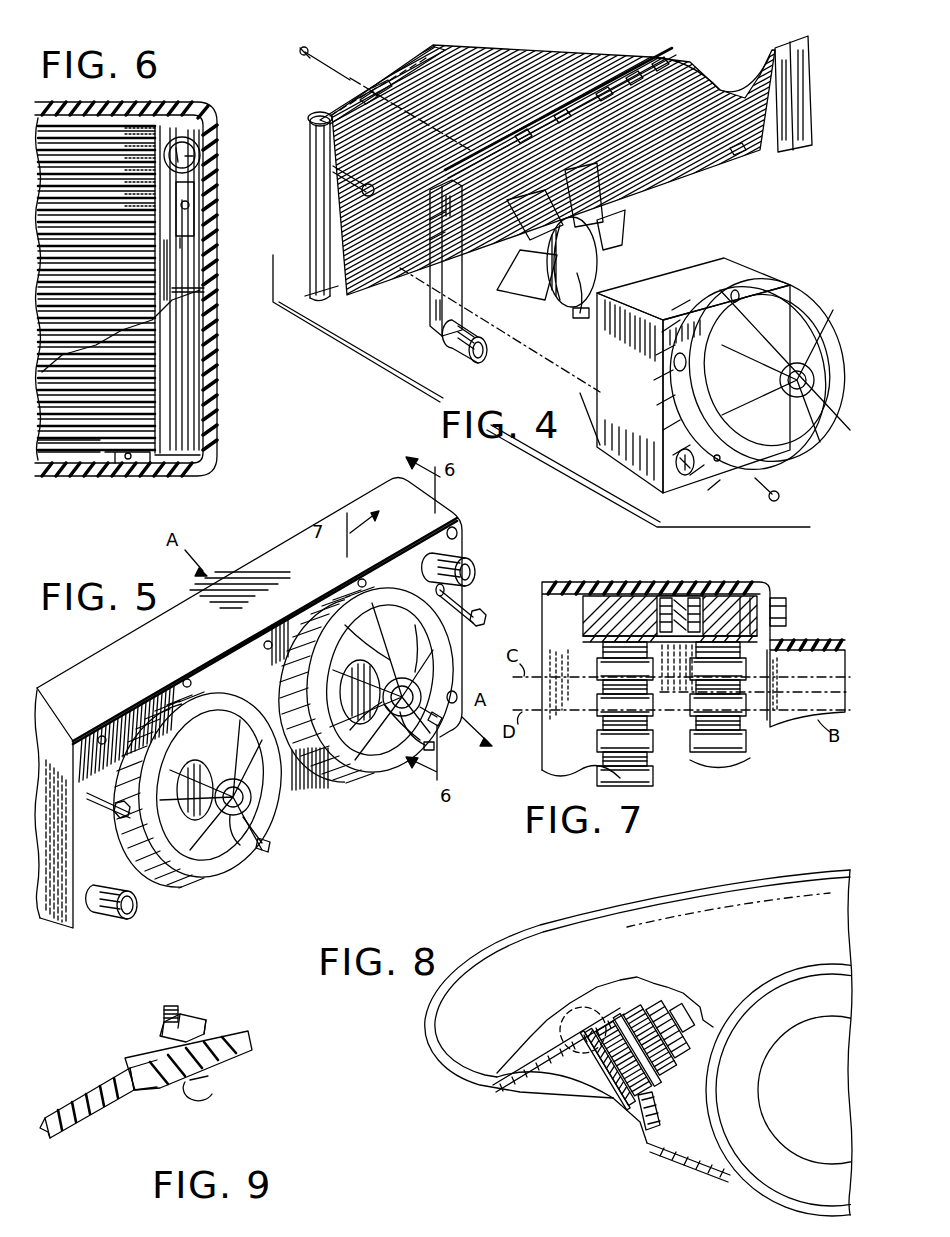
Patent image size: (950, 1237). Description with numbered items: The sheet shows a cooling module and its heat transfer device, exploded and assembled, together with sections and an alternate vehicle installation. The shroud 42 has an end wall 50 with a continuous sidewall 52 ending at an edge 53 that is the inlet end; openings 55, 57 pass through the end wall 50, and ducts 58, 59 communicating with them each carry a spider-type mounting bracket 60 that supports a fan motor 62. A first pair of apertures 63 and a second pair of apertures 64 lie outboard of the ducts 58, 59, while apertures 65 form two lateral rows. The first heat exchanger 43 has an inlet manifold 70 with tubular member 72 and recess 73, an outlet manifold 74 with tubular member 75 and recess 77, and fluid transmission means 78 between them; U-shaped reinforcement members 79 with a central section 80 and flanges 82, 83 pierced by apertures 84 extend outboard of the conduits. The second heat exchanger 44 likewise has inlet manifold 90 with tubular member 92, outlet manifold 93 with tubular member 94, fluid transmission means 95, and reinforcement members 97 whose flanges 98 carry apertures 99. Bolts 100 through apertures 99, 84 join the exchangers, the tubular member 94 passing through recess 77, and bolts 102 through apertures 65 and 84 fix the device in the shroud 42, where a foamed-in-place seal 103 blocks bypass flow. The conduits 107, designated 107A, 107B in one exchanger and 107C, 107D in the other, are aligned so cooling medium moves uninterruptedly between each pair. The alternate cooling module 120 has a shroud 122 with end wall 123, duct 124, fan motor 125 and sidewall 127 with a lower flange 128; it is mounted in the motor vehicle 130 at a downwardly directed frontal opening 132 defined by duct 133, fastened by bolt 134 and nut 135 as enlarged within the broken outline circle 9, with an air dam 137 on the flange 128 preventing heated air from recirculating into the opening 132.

In FIG. 6, the shroud 42 is at (221, 403).
In FIG. 4, the shroud 42 is at (648, 478).
In FIG. 5, the shroud 42 is at (346, 510).
In FIG. 6, the first heat exchanger 43 is at (206, 292).
In FIG. 4, the first heat exchanger 43 is at (425, 306).
In FIG. 8, the first heat exchanger 43 is at (625, 1058).
In FIG. 6, the second heat exchanger 44 is at (200, 434).
In FIG. 4, the second heat exchanger 44 is at (308, 204).
In FIG. 8, the second heat exchanger 44 is at (634, 1090).
In FIG. 4, the end wall 50 is at (760, 462).
In FIG. 5, the end wall 50 is at (300, 782).
In FIG. 7, the end wall 50 is at (788, 636).
In FIG. 6, the sidewall 52 is at (218, 396).
In FIG. 4, the sidewall 52 is at (598, 462).
In FIG. 5, the sidewall 52 is at (256, 552).
In FIG. 7, the sidewall 52 is at (548, 582).
In FIG. 4, the edge 53 is at (566, 340).
In FIG. 5, the edge 53 is at (254, 572).
In FIG. 7, the edge 53 is at (544, 744).
In FIG. 4, the opening 55 is at (780, 362).
In FIG. 5, the opening 55 is at (262, 708).
In FIG. 5, the opening 57 is at (308, 662).
In FIG. 4, the duct 58 is at (800, 270).
In FIG. 5, the duct 58 is at (236, 852).
In FIG. 5, the duct 59 is at (394, 760).
In FIG. 7, the duct 59 is at (820, 638).
In FIG. 4, the spider-type mounting bracket 60 is at (790, 345).
In FIG. 5, the spider-type mounting bracket 60 is at (446, 644).
In FIG. 4, the fan motor 62 is at (564, 306).
In FIG. 5, the fan motor 62 is at (396, 612).
In FIG. 4, the aperture 63 is at (686, 476).
In FIG. 5, the aperture 63 is at (458, 550).
In FIG. 4, the aperture 64 is at (678, 372).
In FIG. 5, the aperture 64 is at (462, 600).
In FIG. 4, the aperture 65 is at (732, 296).
In FIG. 4, the inlet manifold 70 is at (432, 338).
In FIG. 4, the tubular member 72 is at (460, 360).
In FIG. 5, the tubular member 72 is at (124, 918).
In FIG. 4, the recess 73 is at (372, 262).
In FIG. 6, the outlet manifold 74 is at (208, 300).
In FIG. 4, the outlet manifold 74 is at (814, 98).
In FIG. 6, the tubular member 75 is at (194, 153).
In FIG. 5, the tubular member 75 is at (476, 566).
In FIG. 6, the recess 77 is at (196, 222).
In FIG. 4, the recess 77 is at (810, 46).
In FIG. 6, the fluid transmission means 78 is at (60, 152).
In FIG. 4, the fluid transmission means 78 is at (745, 96).
In FIG. 7, the fluid transmission means 78 is at (718, 760).
In FIG. 6, the reinforcement member 79 is at (148, 106).
In FIG. 4, the reinforcement member 79 is at (648, 58).
In FIG. 4, the central section 80 is at (556, 108).
In FIG. 4, the flange 82 is at (666, 62).
In FIG. 7, the flange 82 is at (760, 594).
In FIG. 4, the flange 83 is at (632, 70).
In FIG. 4, the aperture 84 is at (596, 86).
In FIG. 4, the inlet manifold 90 is at (310, 282).
In FIG. 4, the tubular member 92 is at (312, 180).
In FIG. 5, the tubular member 92 is at (92, 804).
In FIG. 6, the outlet manifold 93 is at (200, 373).
In FIG. 6, the tubular member 94 is at (190, 205).
In FIG. 5, the tubular member 94 is at (492, 616).
In FIG. 6, the fluid transmission means 95 is at (46, 443).
In FIG. 4, the fluid transmission means 95 is at (450, 62).
In FIG. 7, the fluid transmission means 95 is at (648, 780).
In FIG. 6, the reinforcement member 97 is at (116, 458).
In FIG. 4, the reinforcement member 97 is at (366, 90).
In FIG. 7, the reinforcement member 97 is at (598, 592).
In FIG. 4, the flange 98 is at (400, 45).
In FIG. 4, the aperture 99 is at (372, 86).
In FIG. 4, the bolt 100 is at (298, 58).
In FIG. 7, the bolt 100 is at (632, 594).
In FIG. 5, the bolt 102 is at (182, 677).
In FIG. 7, the bolt 102 is at (786, 604).
In FIG. 7, the seal 103 is at (684, 596).
In FIG. 7, the conduit 107 is at (598, 770).
In FIG. 7, the conduit 107A is at (752, 670).
In FIG. 7, the conduit 107B is at (750, 740).
In FIG. 7, the conduit 107C is at (598, 670).
In FIG. 7, the conduit 107D is at (600, 712).
In FIG. 8, the cooling module 120 is at (748, 1116).
In FIG. 8, the shroud 122 is at (612, 1000).
In FIG. 8, the end wall 123 is at (642, 982).
In FIG. 8, the duct 124 is at (660, 998).
In FIG. 8, the fan motor 125 is at (692, 1020).
In FIG. 8, the sidewall 127 is at (588, 1000).
In FIG. 9, the sidewall 127 is at (255, 1042).
In FIG. 8, the flange 128 is at (660, 1112).
In FIG. 8, the motor vehicle 130 is at (514, 926).
In FIG. 8, the frontal opening 132 is at (562, 1094).
In FIG. 8, the duct 133 is at (518, 1088).
In FIG. 9, the duct 133 is at (100, 1118).
In FIG. 9, the bolt 134 is at (212, 1090).
In FIG. 9, the nut 135 is at (192, 1010).
In FIG. 8, the air dam 137 is at (656, 1158).
In FIG. 8, the broken outline circle 9 is at (572, 1046).